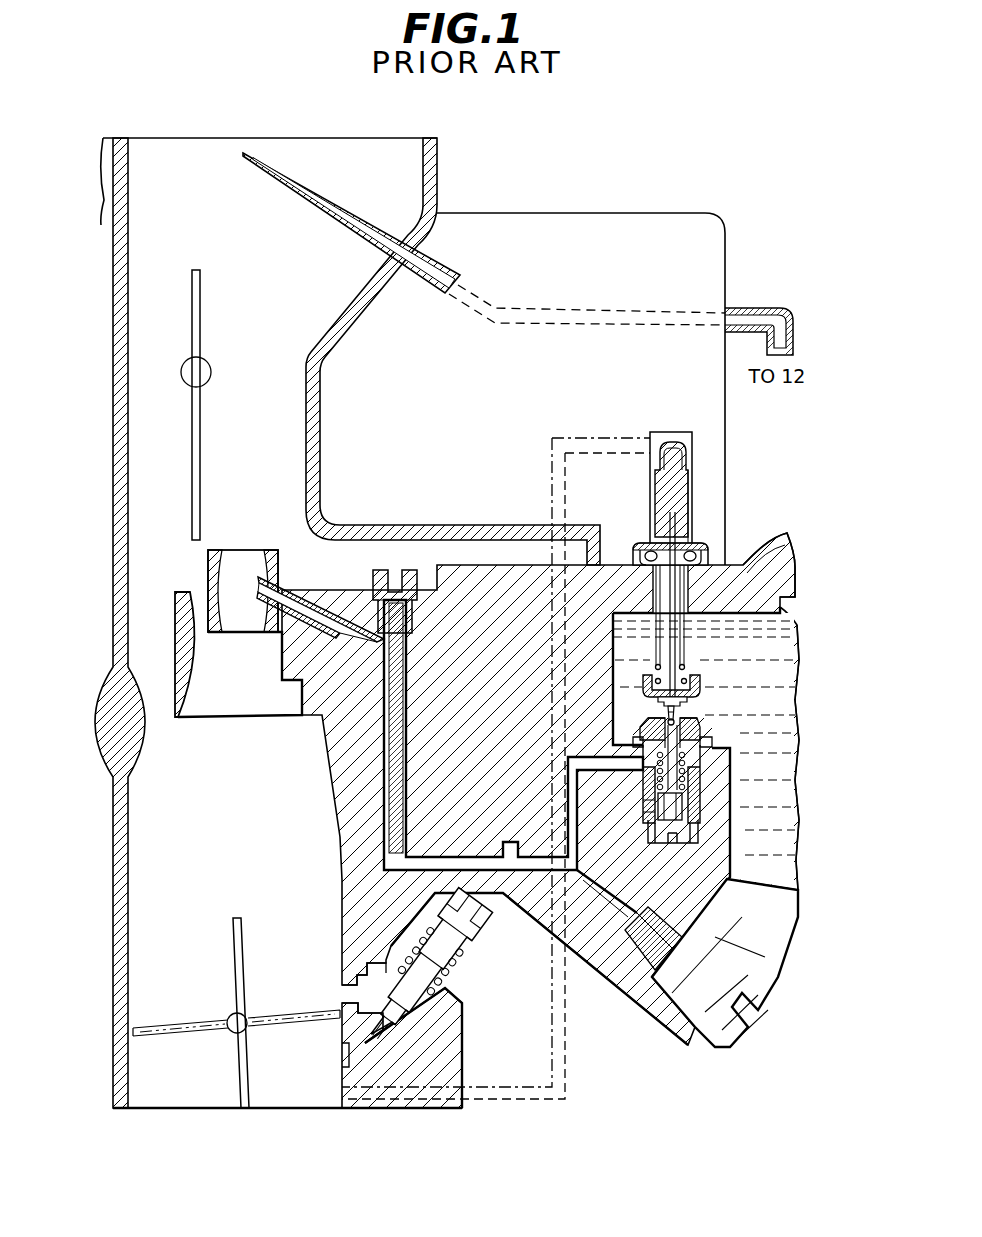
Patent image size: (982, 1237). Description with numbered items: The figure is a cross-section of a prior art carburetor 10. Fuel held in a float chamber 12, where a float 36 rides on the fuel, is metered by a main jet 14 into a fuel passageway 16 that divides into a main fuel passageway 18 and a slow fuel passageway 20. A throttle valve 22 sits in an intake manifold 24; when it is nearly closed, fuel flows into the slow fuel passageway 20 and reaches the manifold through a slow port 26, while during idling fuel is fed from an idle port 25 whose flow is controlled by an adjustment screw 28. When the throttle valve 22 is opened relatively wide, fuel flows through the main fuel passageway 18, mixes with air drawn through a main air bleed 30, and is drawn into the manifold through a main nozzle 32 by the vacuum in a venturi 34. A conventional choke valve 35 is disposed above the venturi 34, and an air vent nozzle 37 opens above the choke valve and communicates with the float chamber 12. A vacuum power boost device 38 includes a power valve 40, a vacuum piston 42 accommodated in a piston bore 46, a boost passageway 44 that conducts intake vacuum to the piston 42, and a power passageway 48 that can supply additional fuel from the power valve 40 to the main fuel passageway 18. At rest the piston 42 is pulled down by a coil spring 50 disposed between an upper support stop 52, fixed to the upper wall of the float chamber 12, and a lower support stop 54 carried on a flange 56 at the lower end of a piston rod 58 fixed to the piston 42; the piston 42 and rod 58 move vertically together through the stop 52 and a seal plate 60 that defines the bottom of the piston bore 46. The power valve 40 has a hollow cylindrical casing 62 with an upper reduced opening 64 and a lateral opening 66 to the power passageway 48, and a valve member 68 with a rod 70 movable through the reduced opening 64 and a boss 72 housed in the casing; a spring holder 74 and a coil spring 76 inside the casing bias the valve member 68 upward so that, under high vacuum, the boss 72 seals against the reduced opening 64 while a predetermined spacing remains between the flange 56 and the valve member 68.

The carburetor 10 is at (622, 210).
The float chamber 12 is at (765, 808).
The main jet 14 is at (680, 932).
The fuel passageway 16 is at (610, 900).
The main fuel passageway 18 is at (488, 866).
The slow fuel passageway 20 is at (507, 842).
The throttle valve 22 is at (233, 1000).
The intake manifold 24 is at (219, 845).
The idle port 25 is at (342, 1068).
The slow port 26 is at (350, 998).
The adjustment screw 28 is at (465, 935).
The main air bleed 30 is at (372, 585).
The main nozzle 32 is at (291, 602).
The venturi 34 is at (242, 563).
The choke valve 35 is at (211, 380).
The float 36 is at (780, 610).
The air vent nozzle 37 is at (362, 217).
The vacuum power boost device 38 is at (697, 473).
The power valve 40 is at (703, 835).
The vacuum piston 42 is at (670, 455).
The boost passageway 44 is at (565, 1080).
The piston bore 46 is at (655, 440).
The power passageway 48 is at (585, 762).
The coil spring 50 is at (651, 617).
The upper support stop 52 is at (708, 555).
The lower support stop 54 is at (700, 690).
The flange 56 is at (650, 708).
The piston rod 58 is at (690, 680).
The seal plate 60 is at (637, 548).
The hollow cylindrical casing 62 is at (700, 727).
The upper reduced opening 64 is at (650, 743).
The lateral opening 66 is at (645, 758).
The valve member 68 is at (676, 705).
The rod 70 is at (690, 832).
The boss 72 is at (703, 742).
The spring holder 74 is at (647, 827).
The coil spring 76 is at (684, 800).